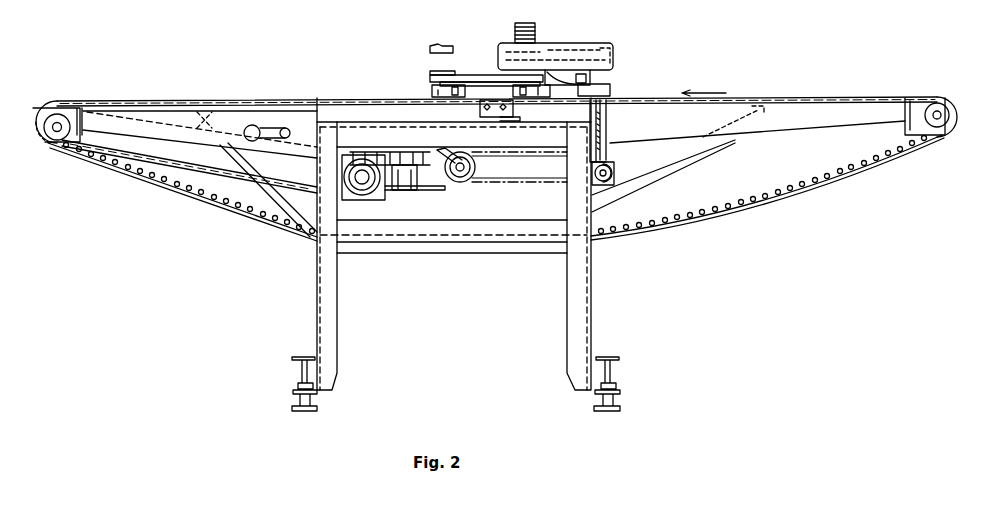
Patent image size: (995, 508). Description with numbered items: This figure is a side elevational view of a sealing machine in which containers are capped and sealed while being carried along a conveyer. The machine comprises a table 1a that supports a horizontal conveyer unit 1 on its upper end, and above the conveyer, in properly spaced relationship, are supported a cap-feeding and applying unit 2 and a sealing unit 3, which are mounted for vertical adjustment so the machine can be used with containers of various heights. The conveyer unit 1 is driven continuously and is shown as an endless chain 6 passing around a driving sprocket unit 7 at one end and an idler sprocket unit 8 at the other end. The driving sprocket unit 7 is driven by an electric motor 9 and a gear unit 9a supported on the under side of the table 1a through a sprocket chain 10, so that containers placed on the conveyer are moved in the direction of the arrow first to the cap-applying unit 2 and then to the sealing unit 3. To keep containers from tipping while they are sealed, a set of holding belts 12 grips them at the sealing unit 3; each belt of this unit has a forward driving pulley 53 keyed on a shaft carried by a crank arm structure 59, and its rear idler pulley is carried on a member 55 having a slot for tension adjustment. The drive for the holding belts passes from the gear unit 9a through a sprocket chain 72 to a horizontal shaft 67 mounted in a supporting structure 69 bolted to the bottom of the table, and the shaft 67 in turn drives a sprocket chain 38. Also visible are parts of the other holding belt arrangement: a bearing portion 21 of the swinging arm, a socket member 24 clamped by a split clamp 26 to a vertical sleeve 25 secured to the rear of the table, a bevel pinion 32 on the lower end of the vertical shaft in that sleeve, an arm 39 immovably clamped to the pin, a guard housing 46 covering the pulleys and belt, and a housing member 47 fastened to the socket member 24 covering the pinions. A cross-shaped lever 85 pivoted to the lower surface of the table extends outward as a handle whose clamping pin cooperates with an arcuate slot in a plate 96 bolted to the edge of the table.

The conveyer unit 1 is at (772, 107).
The table 1a is at (580, 290).
The cap-feeding and applying unit 2 is at (533, 26).
The sealing unit 3 is at (448, 44).
The endless chain 6 is at (637, 226).
The driving sprocket unit 7 is at (36, 111).
The idler sprocket unit 8 is at (957, 110).
The electric motor 9 is at (405, 178).
The gear unit 9a is at (362, 180).
The sprocket chain 10 is at (232, 172).
The set of holding belts 12 is at (475, 74).
The bearing portion 21 is at (588, 76).
The socket member 24 is at (610, 89).
The sleeve 25 is at (603, 137).
The split clamp 26 is at (597, 119).
The bevel pinion 32 is at (610, 160).
The sprocket chain 38 is at (530, 183).
The arm 39 is at (566, 47).
The guard housing 46 is at (600, 50).
The housing member 47 is at (590, 67).
The driving pulley 53 is at (430, 73).
The member 55 is at (513, 90).
The crank arm structure 59 is at (432, 91).
The horizontal shaft 67 is at (462, 181).
The supporting structure 69 is at (447, 158).
The sprocket chain 72 is at (432, 190).
The cross-shaped lever 85 is at (517, 121).
The plate 96 is at (490, 117).